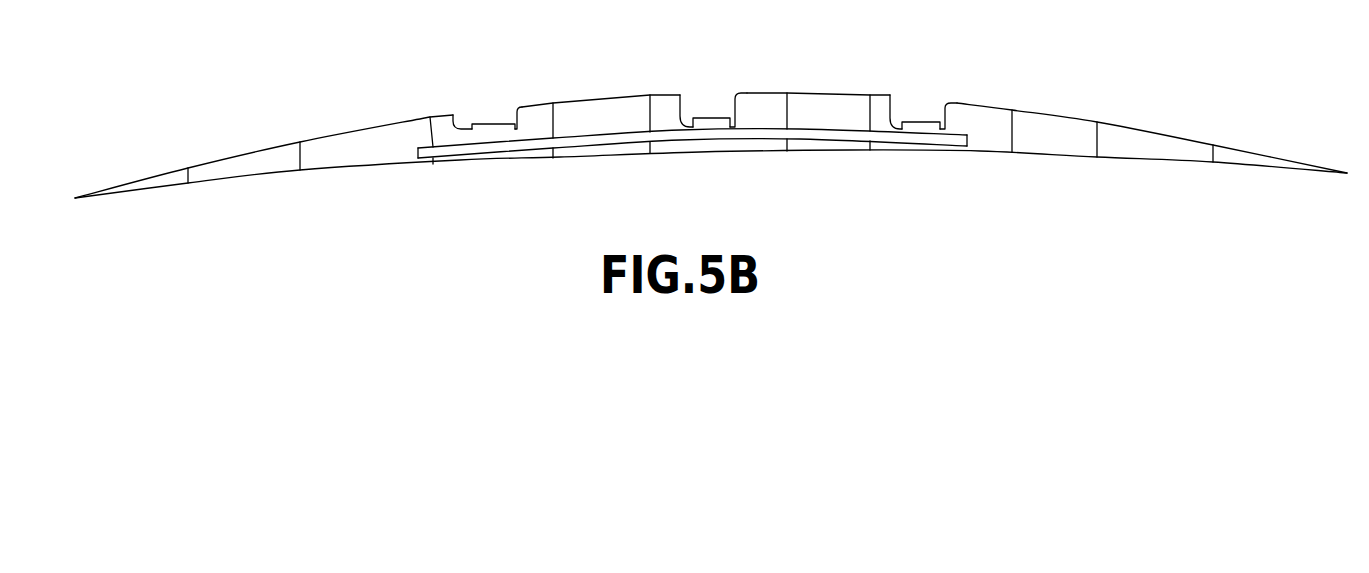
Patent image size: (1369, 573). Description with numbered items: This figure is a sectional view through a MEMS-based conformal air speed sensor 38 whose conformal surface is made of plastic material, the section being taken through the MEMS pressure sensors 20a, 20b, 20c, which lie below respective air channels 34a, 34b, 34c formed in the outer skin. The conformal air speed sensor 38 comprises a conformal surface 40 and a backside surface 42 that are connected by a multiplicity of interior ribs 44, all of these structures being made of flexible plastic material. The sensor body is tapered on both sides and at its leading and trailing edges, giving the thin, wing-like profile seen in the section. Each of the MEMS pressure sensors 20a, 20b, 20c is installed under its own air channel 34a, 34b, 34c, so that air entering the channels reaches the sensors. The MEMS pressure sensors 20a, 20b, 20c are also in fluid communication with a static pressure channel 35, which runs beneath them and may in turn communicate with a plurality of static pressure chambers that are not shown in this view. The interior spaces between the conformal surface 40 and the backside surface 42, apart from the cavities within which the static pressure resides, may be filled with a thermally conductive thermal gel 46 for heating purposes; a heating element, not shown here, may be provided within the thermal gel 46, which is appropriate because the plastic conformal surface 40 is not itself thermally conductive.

The MEMS pressure sensor 20a is at (497, 130).
The MEMS pressure sensor 20b is at (723, 125).
The MEMS pressure sensor 20c is at (925, 128).
The air channel 34a is at (445, 93).
The air channel 34b is at (697, 85).
The air channel 34c is at (960, 75).
The static pressure channel 35 is at (577, 140).
The conformal air speed sensor 38 is at (340, 115).
The conformal surface 40 is at (1050, 110).
The backside surface 42 is at (1117, 158).
The interior ribs 44 is at (300, 162).
The thermal gel 46 is at (380, 155).